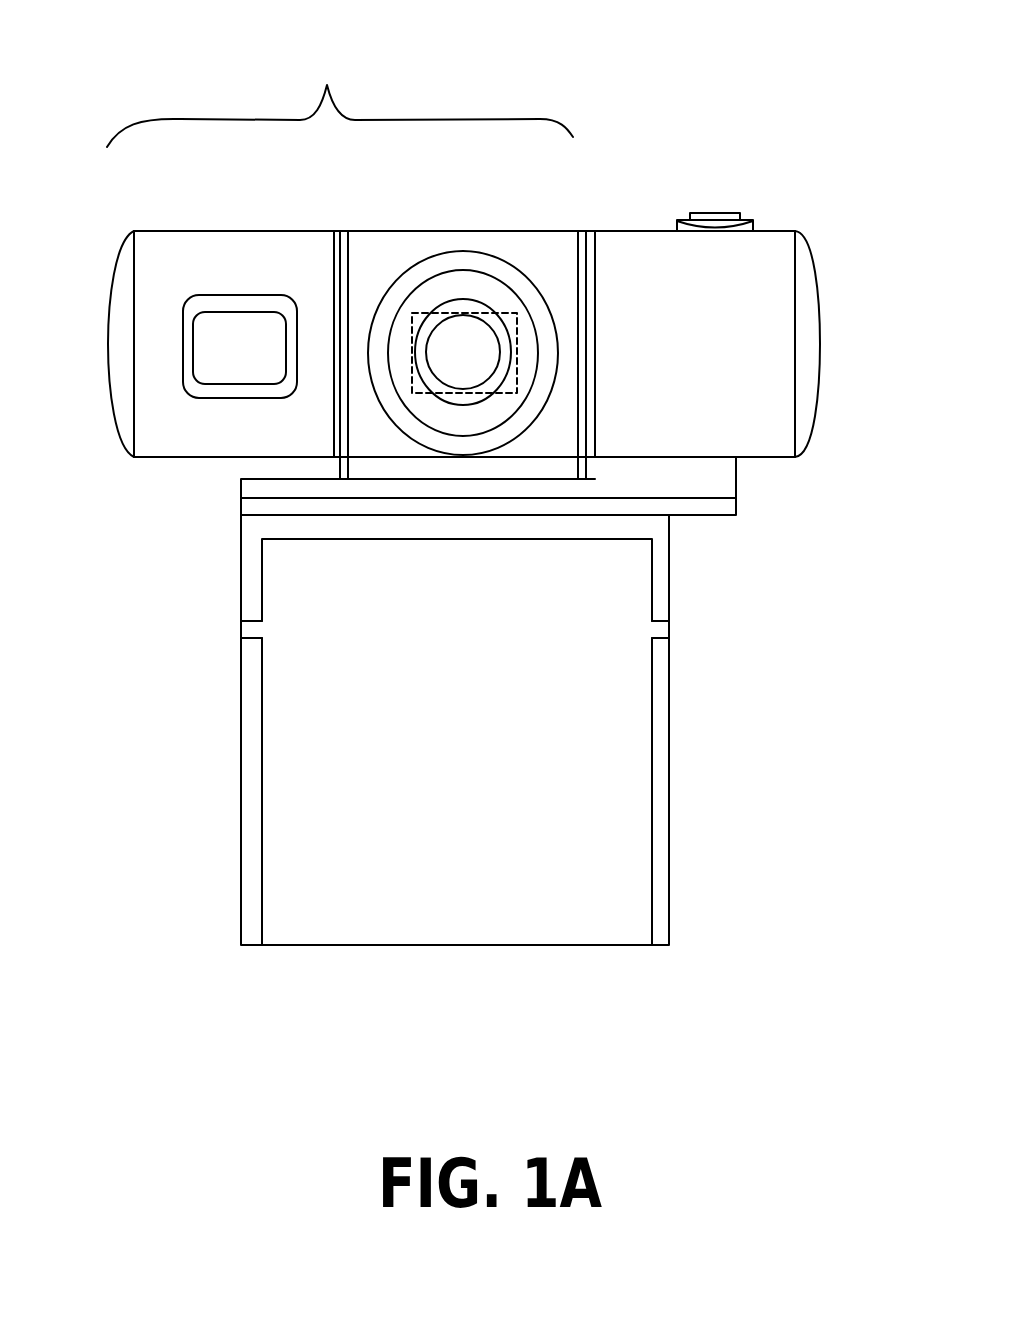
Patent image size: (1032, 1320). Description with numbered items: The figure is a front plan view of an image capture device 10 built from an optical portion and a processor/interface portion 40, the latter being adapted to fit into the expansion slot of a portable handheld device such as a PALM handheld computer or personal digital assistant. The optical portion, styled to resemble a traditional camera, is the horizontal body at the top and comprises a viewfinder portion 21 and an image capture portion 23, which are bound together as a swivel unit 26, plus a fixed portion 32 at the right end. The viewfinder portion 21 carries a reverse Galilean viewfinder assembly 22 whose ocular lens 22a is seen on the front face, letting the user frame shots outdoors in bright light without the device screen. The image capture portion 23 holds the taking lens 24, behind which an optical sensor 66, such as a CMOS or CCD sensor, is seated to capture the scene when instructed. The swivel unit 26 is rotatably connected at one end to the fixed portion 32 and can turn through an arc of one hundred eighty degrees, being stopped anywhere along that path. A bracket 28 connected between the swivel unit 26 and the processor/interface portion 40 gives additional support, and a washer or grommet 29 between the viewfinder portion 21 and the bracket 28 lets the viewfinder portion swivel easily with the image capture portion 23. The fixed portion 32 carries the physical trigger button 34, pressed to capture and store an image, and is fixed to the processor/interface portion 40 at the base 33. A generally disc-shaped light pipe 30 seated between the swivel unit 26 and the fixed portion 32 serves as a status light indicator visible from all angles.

The image capture device 10 is at (718, 117).
The viewfinder portion 21 is at (221, 344).
The reverse Galilean viewfinder assembly 22 is at (182, 348).
The ocular lens 22a is at (204, 398).
The image capture portion 23 is at (464, 355).
The taking lens 24 is at (522, 272).
The swivel unit 26 is at (340, 102).
The bracket 28 is at (347, 231).
The washer or grommet 29 is at (336, 231).
The light pipe 30 is at (596, 257).
The fixed portion 32 is at (707, 344).
The base 33 is at (239, 490).
The trigger button 34 is at (740, 213).
The processor/interface portion 40 is at (455, 730).
The optical sensor 66 is at (517, 368).